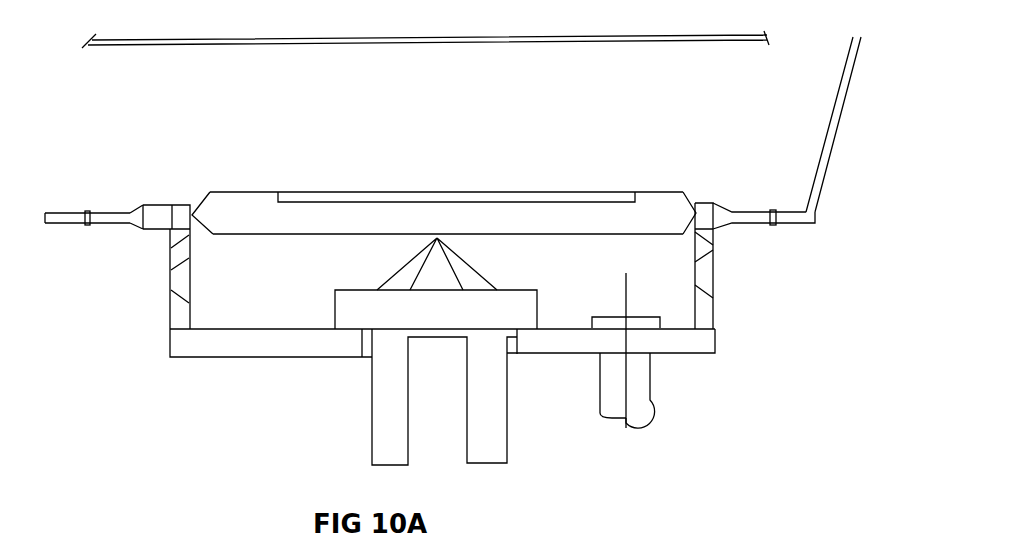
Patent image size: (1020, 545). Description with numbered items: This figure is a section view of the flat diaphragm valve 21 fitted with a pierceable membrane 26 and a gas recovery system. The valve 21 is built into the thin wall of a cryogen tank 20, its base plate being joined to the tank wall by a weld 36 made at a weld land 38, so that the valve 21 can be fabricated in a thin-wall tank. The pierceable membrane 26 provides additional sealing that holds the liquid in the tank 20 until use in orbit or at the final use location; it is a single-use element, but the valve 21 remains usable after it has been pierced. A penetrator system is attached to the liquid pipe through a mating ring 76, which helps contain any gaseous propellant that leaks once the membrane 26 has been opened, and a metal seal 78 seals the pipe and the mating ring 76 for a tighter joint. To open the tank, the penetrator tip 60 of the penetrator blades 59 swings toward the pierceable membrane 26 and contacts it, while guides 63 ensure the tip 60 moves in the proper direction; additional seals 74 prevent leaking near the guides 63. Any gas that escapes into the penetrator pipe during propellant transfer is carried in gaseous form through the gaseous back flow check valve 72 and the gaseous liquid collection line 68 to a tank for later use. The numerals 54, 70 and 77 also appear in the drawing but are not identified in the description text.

The tank 20 is at (57, 213).
The valve 21 is at (545, 42).
The pierceable membrane 26 is at (323, 196).
The weld 36 is at (83, 213).
The weld land 38 is at (110, 223).
The connector block 54 is at (158, 222).
The penetrator blades 59 is at (437, 238).
The penetrator tip 60 is at (437, 238).
The guides 63 is at (507, 420).
The gaseous liquid collection line 68 is at (640, 395).
The housing 70 is at (713, 355).
The gaseous back flow check valve 72 is at (612, 322).
The additional seals 74 is at (367, 357).
The mating ring 76 is at (173, 277).
The left wall 77 is at (172, 318).
The metal seal 78 is at (712, 247).